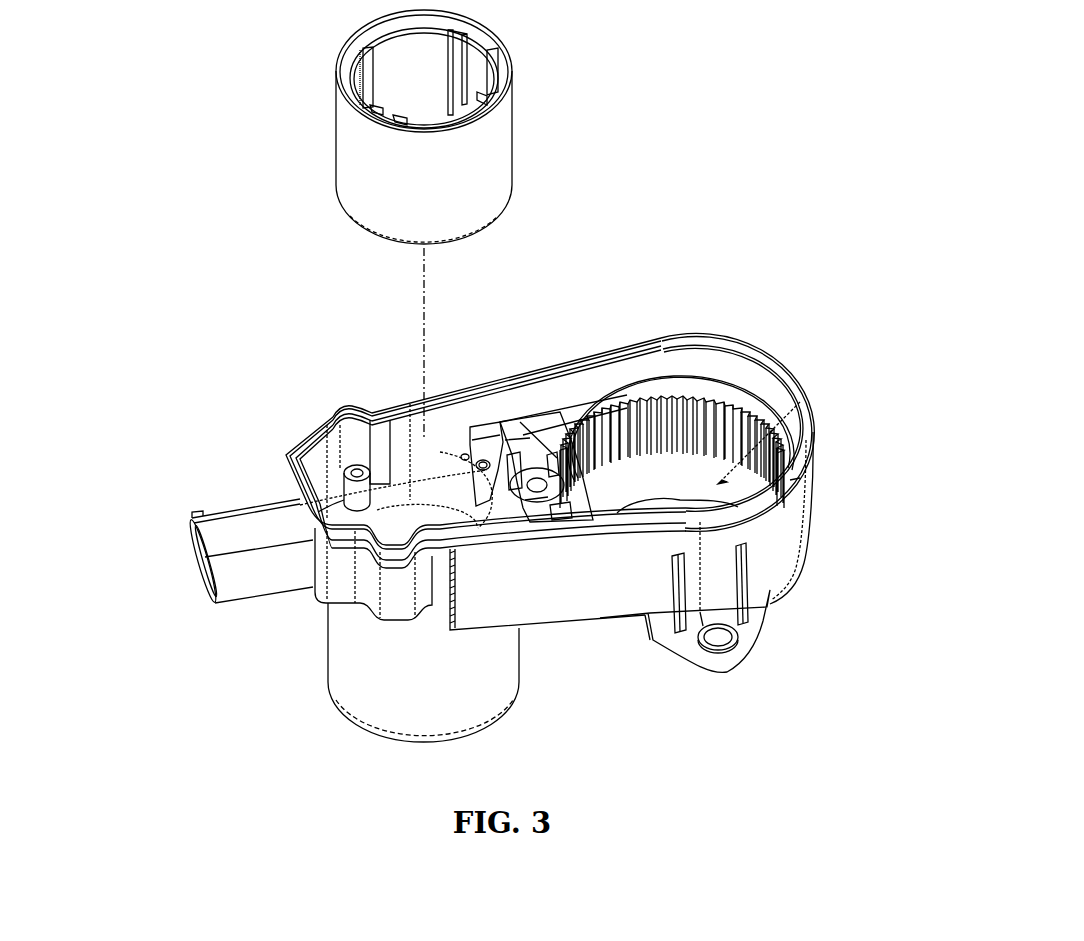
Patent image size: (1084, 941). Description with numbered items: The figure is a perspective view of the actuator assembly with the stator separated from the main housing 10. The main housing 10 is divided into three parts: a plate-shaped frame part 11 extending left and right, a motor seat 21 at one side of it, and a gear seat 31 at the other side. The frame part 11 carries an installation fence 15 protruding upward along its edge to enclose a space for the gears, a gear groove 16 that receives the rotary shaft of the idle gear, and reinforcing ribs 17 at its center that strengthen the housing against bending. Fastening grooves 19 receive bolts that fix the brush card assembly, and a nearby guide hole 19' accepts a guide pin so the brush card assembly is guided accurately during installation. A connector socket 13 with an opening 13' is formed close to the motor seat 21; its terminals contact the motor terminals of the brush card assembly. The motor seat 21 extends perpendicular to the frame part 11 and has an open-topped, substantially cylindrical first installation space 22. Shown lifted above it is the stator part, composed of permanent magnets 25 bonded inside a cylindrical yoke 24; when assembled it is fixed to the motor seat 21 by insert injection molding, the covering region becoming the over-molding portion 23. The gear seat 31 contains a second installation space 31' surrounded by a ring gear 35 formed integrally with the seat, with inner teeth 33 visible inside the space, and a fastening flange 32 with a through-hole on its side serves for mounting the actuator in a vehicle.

The main housing 10 is at (762, 320).
The frame part 11 is at (632, 622).
The connector socket 13 is at (249, 510).
The tube opening 13' is at (135, 562).
The installation fence 15 is at (537, 485).
The gear groove 16 is at (557, 437).
The reinforcing ribs 17 is at (484, 426).
The fastening grooves 19 is at (420, 533).
The guide hole 19' is at (453, 377).
The motor seat 21 is at (500, 722).
The first installation space 22 is at (372, 535).
The over-molding portion 23 is at (357, 468).
The yoke 24 is at (500, 130).
The permanent magnet 25 is at (453, 12).
The gear seat 31 is at (845, 518).
The second installation space 31' is at (856, 476).
The fastening flange 32 is at (745, 630).
The ring gear 33 is at (662, 505).
The ring gear 35 is at (792, 405).